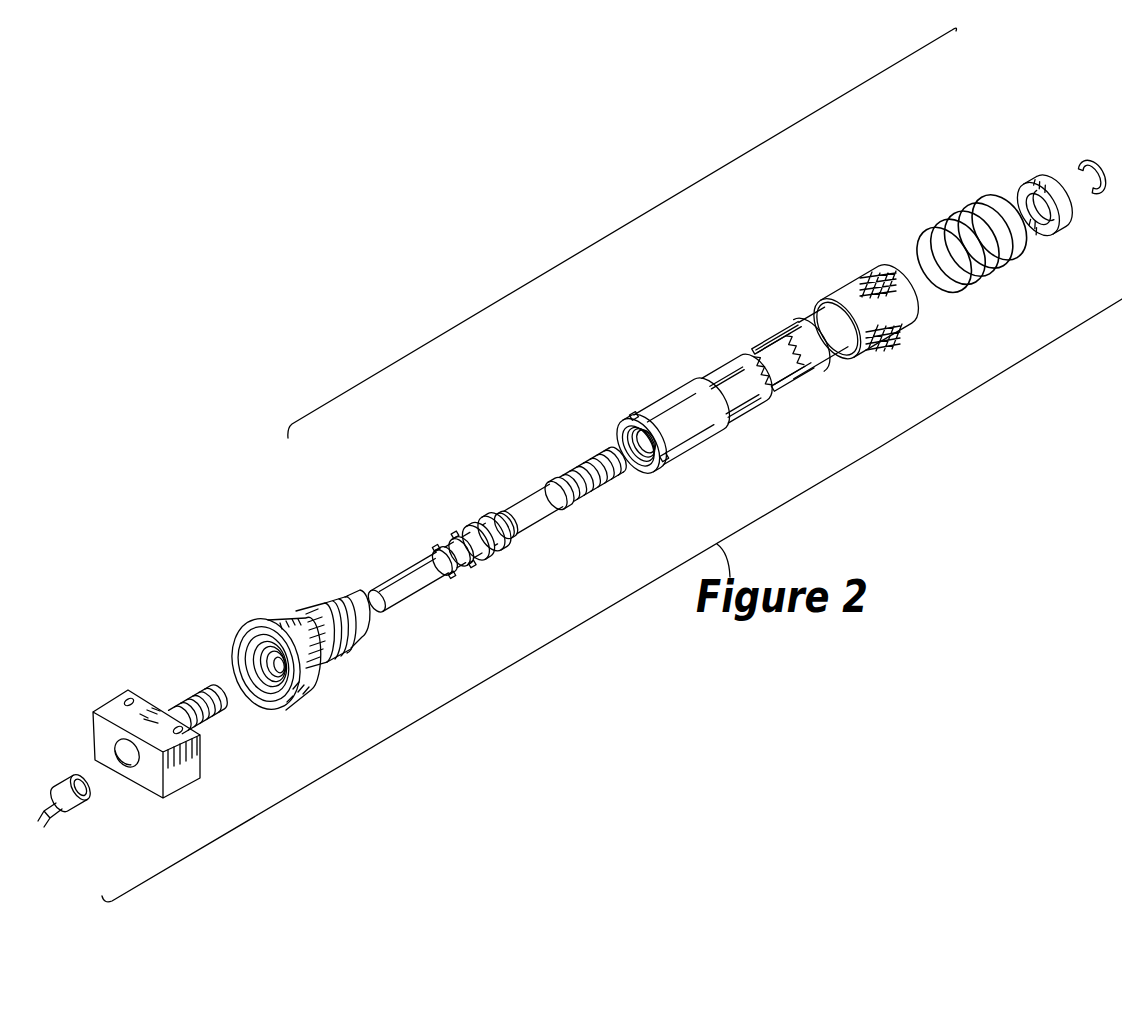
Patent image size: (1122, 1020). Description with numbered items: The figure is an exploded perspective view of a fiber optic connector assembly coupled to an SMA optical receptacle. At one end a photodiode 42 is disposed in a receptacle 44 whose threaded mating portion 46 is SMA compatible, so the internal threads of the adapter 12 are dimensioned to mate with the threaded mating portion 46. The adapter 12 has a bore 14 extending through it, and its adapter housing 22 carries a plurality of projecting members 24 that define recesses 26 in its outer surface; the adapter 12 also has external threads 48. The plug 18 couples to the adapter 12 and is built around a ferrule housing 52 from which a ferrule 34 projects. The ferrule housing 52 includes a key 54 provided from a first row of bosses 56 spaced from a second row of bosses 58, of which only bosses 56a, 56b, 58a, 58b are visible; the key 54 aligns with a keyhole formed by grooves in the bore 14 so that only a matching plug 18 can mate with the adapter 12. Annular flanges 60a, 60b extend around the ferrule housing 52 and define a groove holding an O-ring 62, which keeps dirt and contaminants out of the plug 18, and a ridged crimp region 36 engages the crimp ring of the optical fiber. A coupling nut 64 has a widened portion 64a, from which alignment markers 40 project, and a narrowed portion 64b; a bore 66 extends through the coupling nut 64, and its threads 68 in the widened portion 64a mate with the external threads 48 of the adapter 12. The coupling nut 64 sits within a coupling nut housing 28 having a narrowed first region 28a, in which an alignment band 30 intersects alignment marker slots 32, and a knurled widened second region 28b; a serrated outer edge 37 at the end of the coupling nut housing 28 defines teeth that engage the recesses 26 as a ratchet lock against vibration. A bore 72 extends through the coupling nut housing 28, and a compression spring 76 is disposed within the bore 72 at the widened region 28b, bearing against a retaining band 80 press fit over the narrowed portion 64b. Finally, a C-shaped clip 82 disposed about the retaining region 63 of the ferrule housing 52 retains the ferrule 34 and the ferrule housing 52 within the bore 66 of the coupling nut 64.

The adapter 12 is at (268, 556).
The bore 14 is at (247, 658).
The plug 18 is at (628, 226).
The adapter housing 22 is at (276, 626).
The projecting members 24 is at (311, 620).
The recesses 26 is at (329, 670).
The coupling nut housing 28 is at (335, 648).
The first region 28a is at (805, 318).
The second region 28b is at (848, 289).
The alignment band 30 is at (839, 355).
The alignment marker slots 32 is at (790, 338).
The ferrule 34 is at (408, 578).
The crimp-ring-accepting portion 36 is at (579, 456).
The serrated outer edge 37 is at (751, 352).
The alignment markers 40 is at (640, 416).
The photodiode 42 is at (71, 780).
The receptacle 44 is at (112, 709).
The threaded mating portion 46 is at (186, 683).
The external threads 48 is at (325, 578).
The ferrule housing 52 is at (461, 404).
The key 54 is at (427, 435).
The first row of bosses 56 is at (393, 513).
The boss 56a is at (436, 550).
The boss 56b is at (451, 575).
The second row of bosses 58 is at (435, 490).
The boss 58a is at (456, 533).
The boss 58b is at (472, 564).
The annular flange 60a is at (473, 527).
The annular flange 60b is at (488, 522).
The O-ring 62 is at (504, 550).
The retaining region 63 is at (558, 503).
The coupling nut 64 is at (662, 344).
The widened portion 64a is at (672, 410).
The narrowed portion 64b is at (720, 390).
The bore 66 is at (604, 444).
The threads 68 is at (645, 468).
The bore 72 is at (808, 398).
The compression spring 76 is at (943, 237).
The retaining band 80 is at (1049, 182).
The C-shaped clip 82 is at (1094, 163).